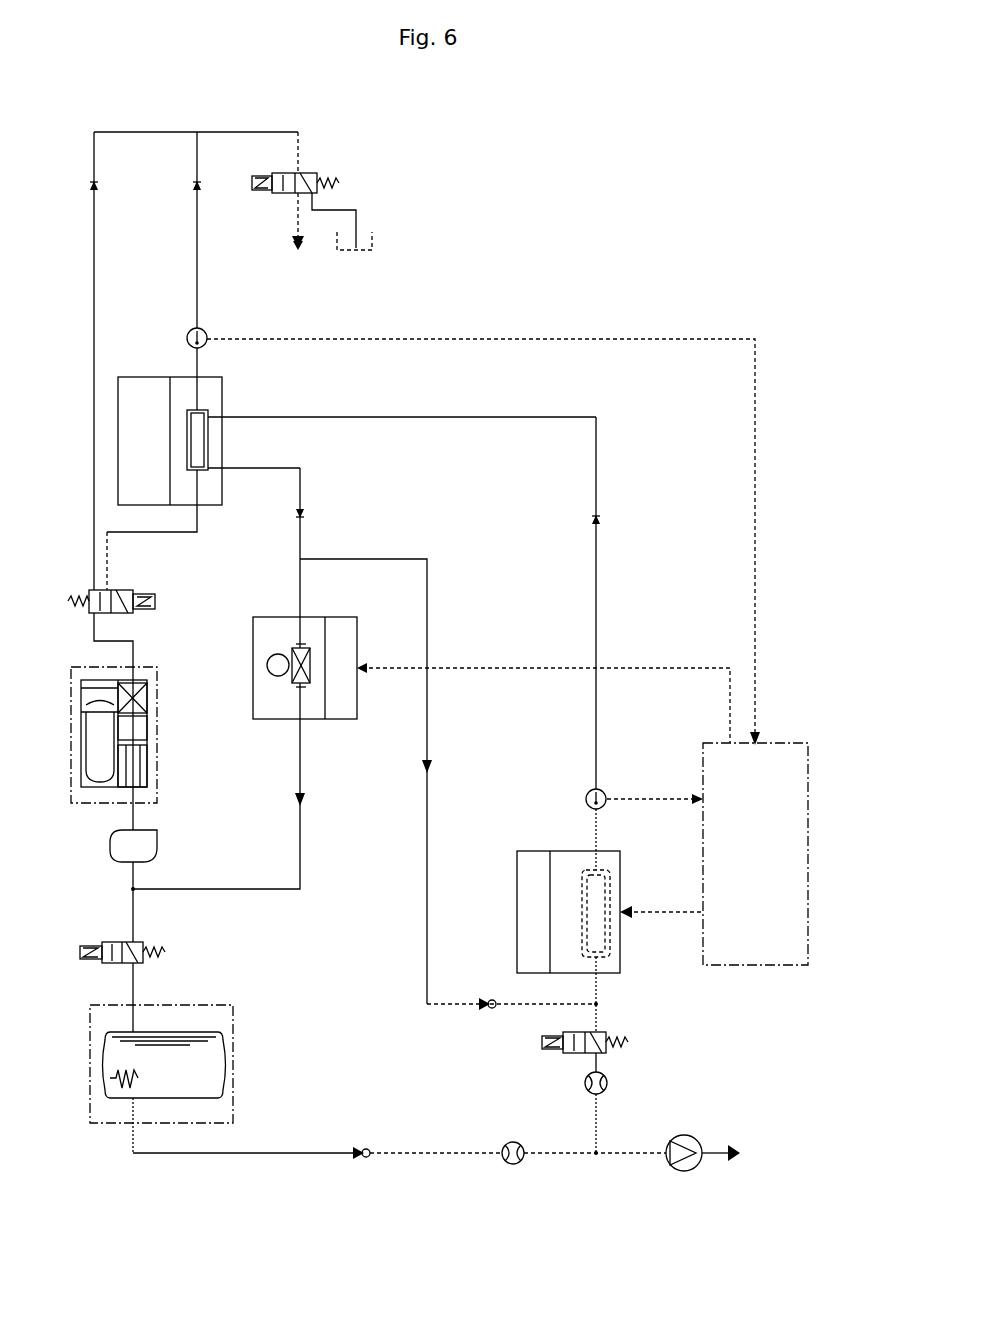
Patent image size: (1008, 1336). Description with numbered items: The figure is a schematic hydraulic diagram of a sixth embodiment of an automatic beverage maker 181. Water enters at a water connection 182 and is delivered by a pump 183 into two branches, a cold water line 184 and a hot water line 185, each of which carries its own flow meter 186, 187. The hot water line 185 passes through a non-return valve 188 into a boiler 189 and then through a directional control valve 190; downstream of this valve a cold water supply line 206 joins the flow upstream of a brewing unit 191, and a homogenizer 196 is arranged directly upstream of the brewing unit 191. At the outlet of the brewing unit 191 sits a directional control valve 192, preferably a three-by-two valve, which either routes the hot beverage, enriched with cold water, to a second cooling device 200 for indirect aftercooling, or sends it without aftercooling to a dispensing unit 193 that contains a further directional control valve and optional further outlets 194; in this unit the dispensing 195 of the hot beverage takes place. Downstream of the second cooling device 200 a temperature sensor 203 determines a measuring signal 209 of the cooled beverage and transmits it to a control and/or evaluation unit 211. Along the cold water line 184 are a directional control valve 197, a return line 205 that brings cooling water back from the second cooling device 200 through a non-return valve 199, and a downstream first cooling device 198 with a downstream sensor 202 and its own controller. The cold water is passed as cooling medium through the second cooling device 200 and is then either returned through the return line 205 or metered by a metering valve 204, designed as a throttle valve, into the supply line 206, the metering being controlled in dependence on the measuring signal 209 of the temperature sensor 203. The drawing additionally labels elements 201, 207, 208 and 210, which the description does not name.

The automatic beverage maker 181 is at (777, 590).
The water connection 182 is at (733, 1145).
The pump 183 is at (675, 1172).
The cold water line 184 is at (596, 1123).
The hot water line 185 is at (557, 1153).
The flow meter 186 is at (607, 1080).
The flow meter 187 is at (505, 1162).
The non-return valve 188 is at (368, 1150).
The boiler 189 is at (235, 1067).
The directional control valve 190 is at (163, 950).
The brewing unit 191 is at (157, 785).
The directional control valve 192 is at (132, 613).
The dispensing unit 193 is at (305, 173).
The further outlets 194 is at (374, 249).
The dispensing 195 is at (290, 240).
The homogenizer 196 is at (157, 850).
The directional control valve 197 is at (610, 1035).
The first cooling device 198 is at (620, 955).
The non-return valve 199 is at (480, 1000).
The second cooling device 200 is at (222, 450).
The heat exchanger 201 is at (620, 880).
The sensor 202 is at (603, 790).
The temperature sensor 203 is at (204, 328).
The metering valve 204 is at (337, 720).
The return line 205 is at (430, 622).
The cold water supply line 206 is at (303, 867).
The line 207 is at (200, 533).
The line 208 is at (198, 123).
The measuring signal 209 is at (611, 337).
The signal line 210 is at (658, 668).
The control and/or evaluation unit 211 is at (810, 838).